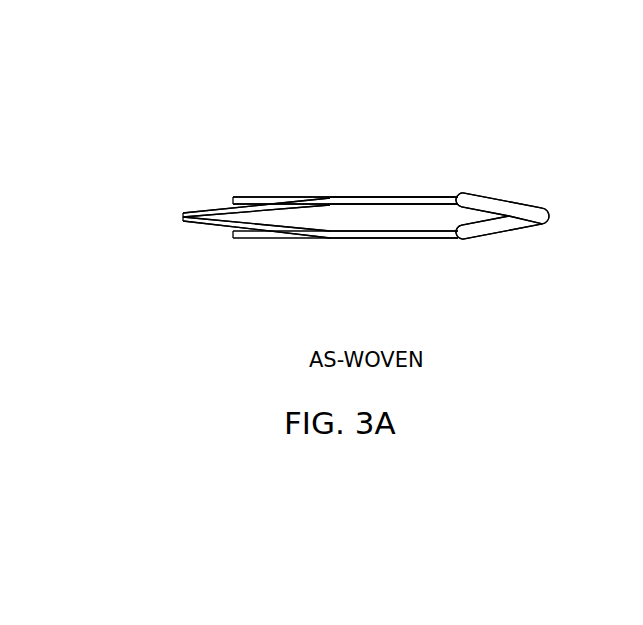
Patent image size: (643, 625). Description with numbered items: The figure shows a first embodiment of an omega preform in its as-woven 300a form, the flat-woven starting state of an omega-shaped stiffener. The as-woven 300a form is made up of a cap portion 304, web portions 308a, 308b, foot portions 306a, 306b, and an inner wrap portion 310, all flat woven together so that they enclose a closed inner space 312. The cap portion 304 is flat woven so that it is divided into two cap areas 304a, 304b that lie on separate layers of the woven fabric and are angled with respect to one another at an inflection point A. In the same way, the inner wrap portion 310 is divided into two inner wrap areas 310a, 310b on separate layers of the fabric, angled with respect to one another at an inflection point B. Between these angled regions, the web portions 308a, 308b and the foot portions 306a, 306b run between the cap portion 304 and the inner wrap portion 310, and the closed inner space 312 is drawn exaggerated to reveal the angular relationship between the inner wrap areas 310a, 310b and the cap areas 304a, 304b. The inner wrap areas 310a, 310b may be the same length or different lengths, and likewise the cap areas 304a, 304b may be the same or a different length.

The as-woven form 300a is at (196, 130).
The inner wrap portion 310 is at (168, 238).
The inner wrap area 310a is at (193, 212).
The inner wrap area 310b is at (200, 222).
The inflection point B is at (183, 218).
The foot portion 306a is at (253, 197).
The foot portion 306b is at (253, 238).
The closed inner space 312 is at (345, 197).
The web portion 308a is at (380, 197).
The web portion 308b is at (345, 238).
The cap portion 304 is at (553, 247).
The cap area 304a is at (500, 197).
The cap area 304b is at (500, 240).
The inflection point A is at (556, 212).